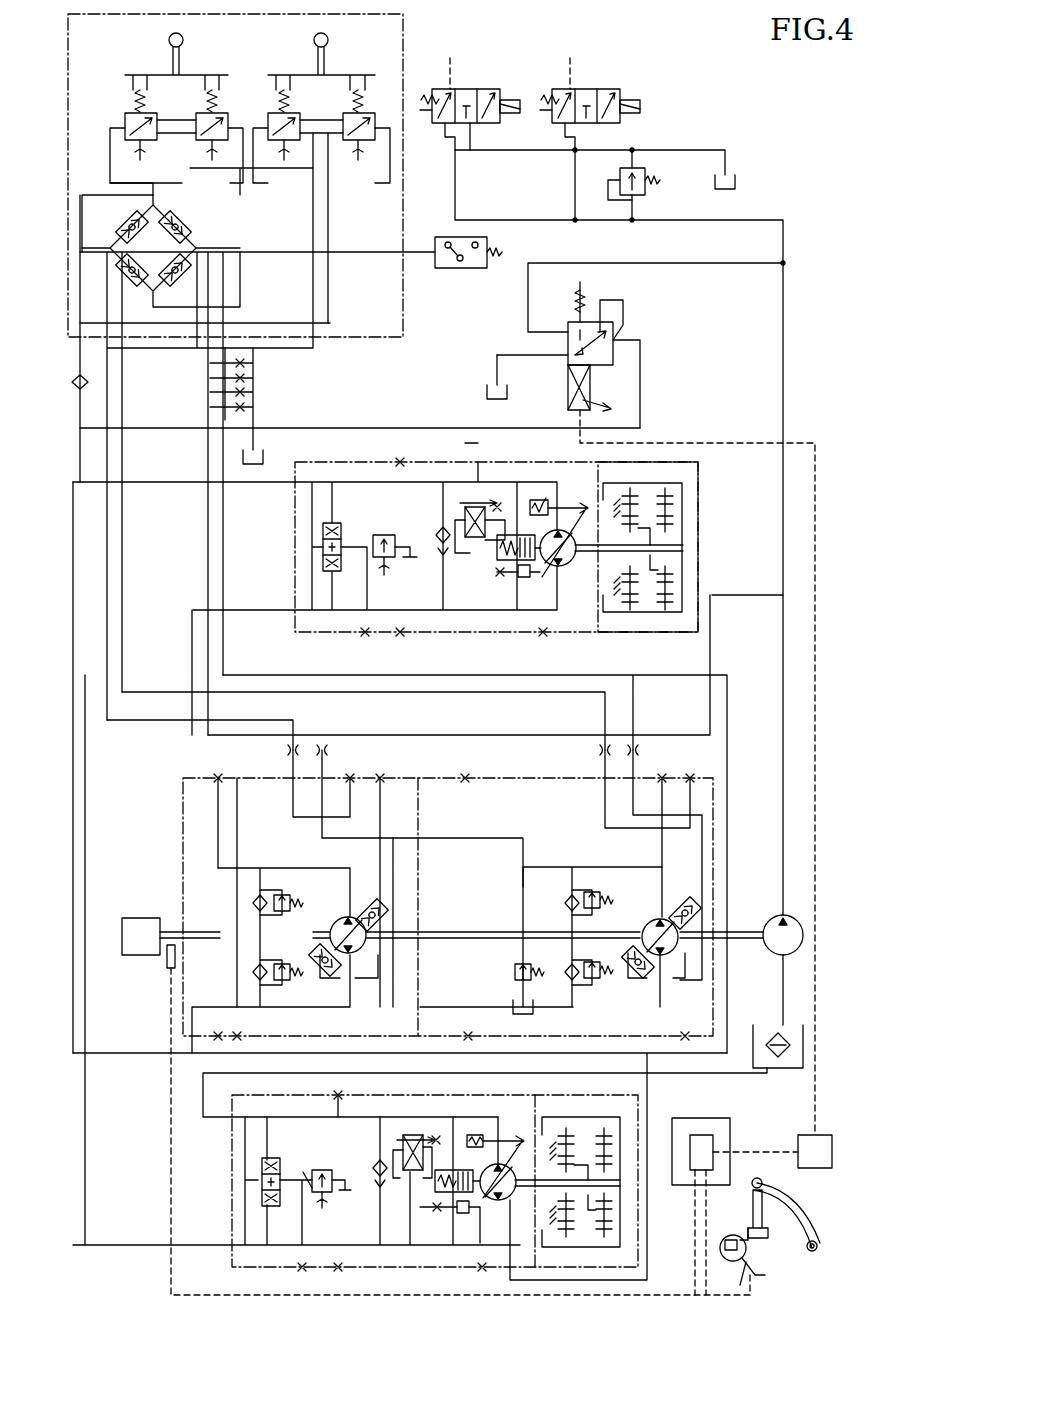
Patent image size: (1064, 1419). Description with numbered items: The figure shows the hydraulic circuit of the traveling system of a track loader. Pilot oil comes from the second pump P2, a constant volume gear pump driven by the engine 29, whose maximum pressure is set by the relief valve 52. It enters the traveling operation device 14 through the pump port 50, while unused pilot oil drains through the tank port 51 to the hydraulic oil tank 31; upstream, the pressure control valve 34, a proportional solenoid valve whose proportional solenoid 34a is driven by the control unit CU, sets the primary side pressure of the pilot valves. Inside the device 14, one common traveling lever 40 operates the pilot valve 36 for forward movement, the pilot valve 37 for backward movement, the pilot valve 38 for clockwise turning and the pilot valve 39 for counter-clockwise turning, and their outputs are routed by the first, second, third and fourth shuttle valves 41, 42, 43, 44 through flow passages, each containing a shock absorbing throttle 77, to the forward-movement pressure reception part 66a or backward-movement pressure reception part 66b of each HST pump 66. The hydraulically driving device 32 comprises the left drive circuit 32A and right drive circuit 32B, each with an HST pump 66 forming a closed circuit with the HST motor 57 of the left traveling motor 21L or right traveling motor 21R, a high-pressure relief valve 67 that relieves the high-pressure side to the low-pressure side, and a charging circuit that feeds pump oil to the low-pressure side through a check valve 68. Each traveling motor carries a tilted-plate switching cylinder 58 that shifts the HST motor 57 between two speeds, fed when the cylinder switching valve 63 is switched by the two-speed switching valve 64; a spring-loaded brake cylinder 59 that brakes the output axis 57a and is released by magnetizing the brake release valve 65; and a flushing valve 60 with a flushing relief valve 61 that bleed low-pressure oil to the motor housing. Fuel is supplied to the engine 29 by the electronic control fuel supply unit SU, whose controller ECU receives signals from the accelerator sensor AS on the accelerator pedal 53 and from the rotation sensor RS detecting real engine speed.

The traveling operation device 14 is at (418, 310).
The left traveling motor 21L is at (282, 610).
The right traveling motor 21R is at (355, 1191).
The engine 29 is at (132, 955).
The hydraulic oil tank 31 is at (483, 398).
The hydraulically driving device 32 is at (712, 772).
The left drive circuit 32A is at (413, 945).
The right drive circuit 32B is at (591, 921).
The pressure control valve 34 is at (635, 355).
The proportional solenoid 34a is at (610, 375).
The pilot valve for forward movement 36 is at (288, 172).
The pilot valve for backward movement 37 is at (363, 172).
The pilot valve for clockwise turning 38 is at (238, 104).
The pilot valve for counter-clockwise turning 39 is at (118, 153).
The traveling lever 40 is at (125, 73).
The first shuttle valve 41 is at (138, 283).
The second shuttle valve 42 is at (141, 238).
The third shuttle valve 43 is at (190, 228).
The fourth shuttle valve 44 is at (190, 272).
The pump port 50 is at (72, 352).
The tank port 51 is at (324, 350).
The relief valve 52 is at (660, 163).
The accelerator pedal 53 is at (812, 1205).
The HST motor 57 is at (575, 572).
The output axis 57a is at (683, 522).
The tilted-plate switching cylinder 58 is at (532, 588).
The brake cylinder 59 is at (515, 578).
The flushing valve 60 is at (312, 513).
The flushing relief valve 61 is at (400, 532).
The cylinder switching valve 63 is at (462, 494).
The two-speed switching valve 64 is at (503, 78).
The brake release valve 65 is at (623, 78).
The HST pump 66 is at (340, 905).
The forward-movement pressure reception part 66a is at (385, 915).
The backward-movement pressure reception part 66b is at (340, 978).
The high-pressure relief valve 67 is at (612, 887).
The check valve 68 is at (570, 888).
The shock absorbing throttle 77 is at (337, 738).
The second pump P2 is at (778, 915).
The rotation sensor RS is at (165, 970).
The electronic control fuel supply unit SU is at (701, 1206).
The controller ECU is at (701, 1152).
The control unit CU is at (810, 1168).
The accelerator sensor AS is at (748, 1260).